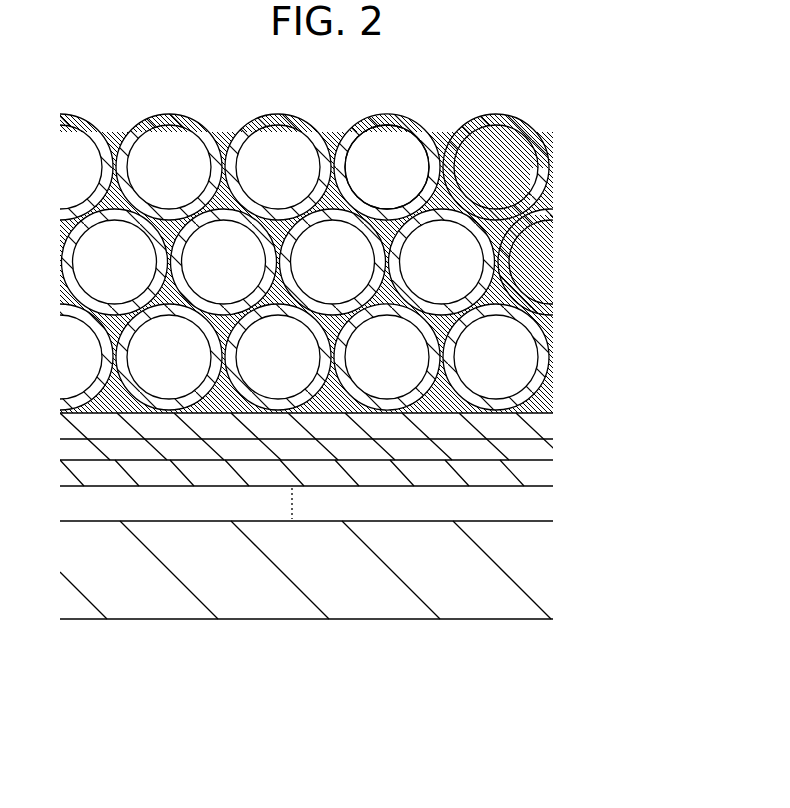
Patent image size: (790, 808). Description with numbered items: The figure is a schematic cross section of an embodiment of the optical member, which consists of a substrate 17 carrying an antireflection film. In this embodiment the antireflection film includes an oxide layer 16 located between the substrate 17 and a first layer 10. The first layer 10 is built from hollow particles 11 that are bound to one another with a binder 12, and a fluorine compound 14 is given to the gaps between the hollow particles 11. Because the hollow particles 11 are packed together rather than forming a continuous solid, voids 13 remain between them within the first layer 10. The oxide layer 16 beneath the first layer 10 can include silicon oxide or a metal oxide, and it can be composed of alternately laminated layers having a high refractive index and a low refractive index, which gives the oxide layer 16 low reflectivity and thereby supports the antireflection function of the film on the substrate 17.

The first layer 10 is at (346, 223).
The hollow particles 11 is at (388, 127).
The binder 12 is at (440, 133).
The voids 13 is at (494, 228).
The fluorine compound 14 is at (552, 200).
The oxide layer 16 is at (637, 415).
The substrate 17 is at (435, 602).